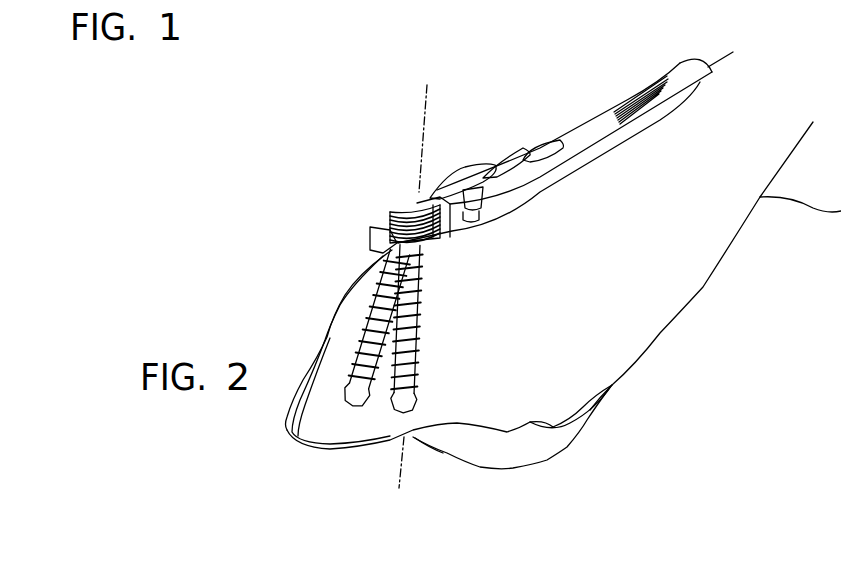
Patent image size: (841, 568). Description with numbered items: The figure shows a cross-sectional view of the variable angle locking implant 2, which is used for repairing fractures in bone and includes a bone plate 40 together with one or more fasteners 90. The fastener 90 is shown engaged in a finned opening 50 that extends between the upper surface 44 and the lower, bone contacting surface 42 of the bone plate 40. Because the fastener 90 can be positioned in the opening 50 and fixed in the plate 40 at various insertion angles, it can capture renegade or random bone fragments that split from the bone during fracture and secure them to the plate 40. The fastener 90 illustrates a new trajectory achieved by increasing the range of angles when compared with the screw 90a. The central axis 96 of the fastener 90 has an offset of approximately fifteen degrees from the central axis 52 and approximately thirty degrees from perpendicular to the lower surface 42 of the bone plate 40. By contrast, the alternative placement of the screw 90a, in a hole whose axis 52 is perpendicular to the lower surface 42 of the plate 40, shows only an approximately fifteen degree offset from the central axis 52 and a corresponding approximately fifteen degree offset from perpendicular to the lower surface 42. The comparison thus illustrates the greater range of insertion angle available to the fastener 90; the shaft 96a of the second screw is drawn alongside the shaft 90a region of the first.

The variable angle locking implant 2 is at (505, 108).
The bone plate 40 is at (594, 122).
The lower bone contacting surface 42 is at (697, 88).
The upper surface 44 is at (680, 60).
The finned opening 50 is at (393, 228).
The central axis 52 is at (400, 453).
The fastener 90 is at (370, 330).
The screw 90a is at (413, 340).
The central axis of fastener 96 is at (408, 192).
The threaded shaft of second screw 96a is at (420, 368).